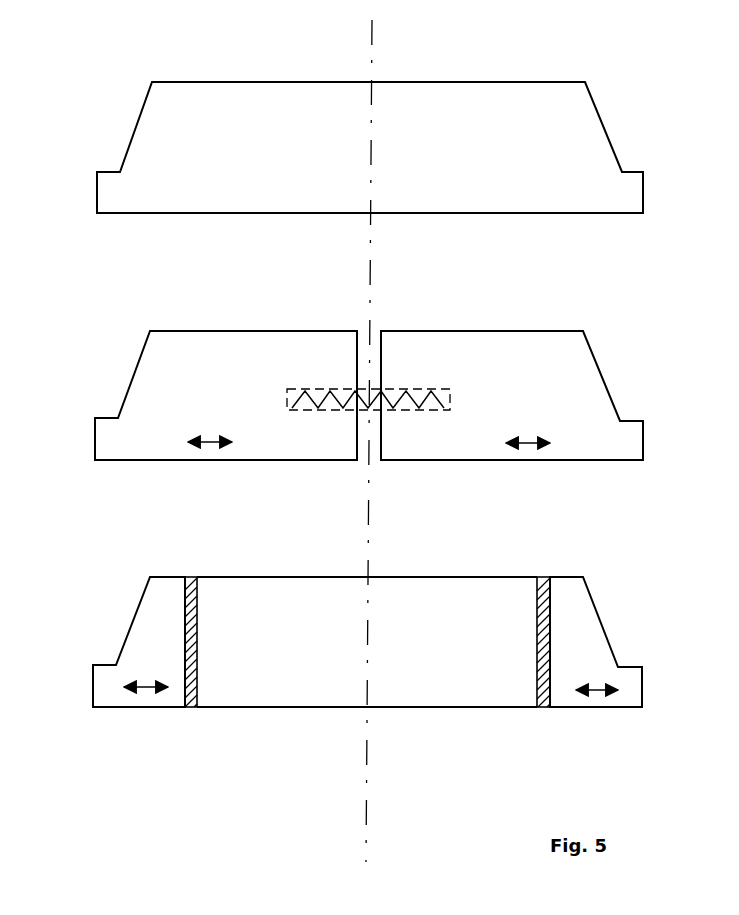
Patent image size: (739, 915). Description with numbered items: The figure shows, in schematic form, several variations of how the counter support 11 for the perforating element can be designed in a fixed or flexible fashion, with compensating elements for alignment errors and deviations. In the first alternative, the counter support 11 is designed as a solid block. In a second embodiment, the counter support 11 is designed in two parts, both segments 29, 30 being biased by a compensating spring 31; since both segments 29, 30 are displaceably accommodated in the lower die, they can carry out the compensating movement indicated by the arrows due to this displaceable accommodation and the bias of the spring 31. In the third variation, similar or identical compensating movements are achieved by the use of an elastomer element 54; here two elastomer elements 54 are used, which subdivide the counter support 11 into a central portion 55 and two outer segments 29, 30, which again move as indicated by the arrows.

The counter support 11 is at (122, 112).
The segment 29 is at (212, 380).
The segment 30 is at (552, 389).
The compensating spring 31 is at (417, 392).
The elastomer element 54 is at (190, 667).
The central portion 55 is at (397, 615).